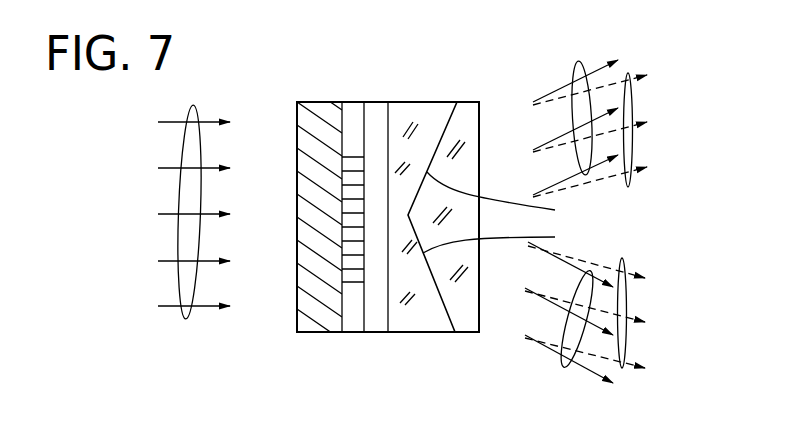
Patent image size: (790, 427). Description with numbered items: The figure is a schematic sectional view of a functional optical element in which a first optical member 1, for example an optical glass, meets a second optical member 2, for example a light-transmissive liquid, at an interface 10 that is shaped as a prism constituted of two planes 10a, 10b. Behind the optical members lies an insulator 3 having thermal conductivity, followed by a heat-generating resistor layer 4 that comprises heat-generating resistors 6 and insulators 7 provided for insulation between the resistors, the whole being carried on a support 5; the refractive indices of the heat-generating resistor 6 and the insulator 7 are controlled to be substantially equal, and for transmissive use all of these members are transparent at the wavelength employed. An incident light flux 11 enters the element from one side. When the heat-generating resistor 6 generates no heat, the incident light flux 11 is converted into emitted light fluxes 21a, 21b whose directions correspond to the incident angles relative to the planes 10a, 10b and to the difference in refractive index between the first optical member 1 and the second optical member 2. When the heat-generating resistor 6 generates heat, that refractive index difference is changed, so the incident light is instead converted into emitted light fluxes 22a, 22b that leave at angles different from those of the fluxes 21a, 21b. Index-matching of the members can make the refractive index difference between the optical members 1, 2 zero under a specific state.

The first optical member 1 is at (463, 115).
The second optical member 2 is at (424, 118).
The insulator having thermal conductivity 3 is at (378, 112).
The heat-generating resistor layer 4 is at (353, 108).
The support 5 is at (320, 118).
The heat-generating resistor 6 is at (352, 250).
The insulator 7 is at (353, 310).
The interface 10 is at (600, 198).
The plane 10a is at (515, 200).
The plane 10b is at (513, 238).
The incident light flux 11 is at (186, 320).
The emitted light flux 21a is at (630, 186).
The emitted light flux 21b is at (624, 258).
The emitted light flux 22a is at (579, 61).
The emitted light flux 22b is at (565, 366).